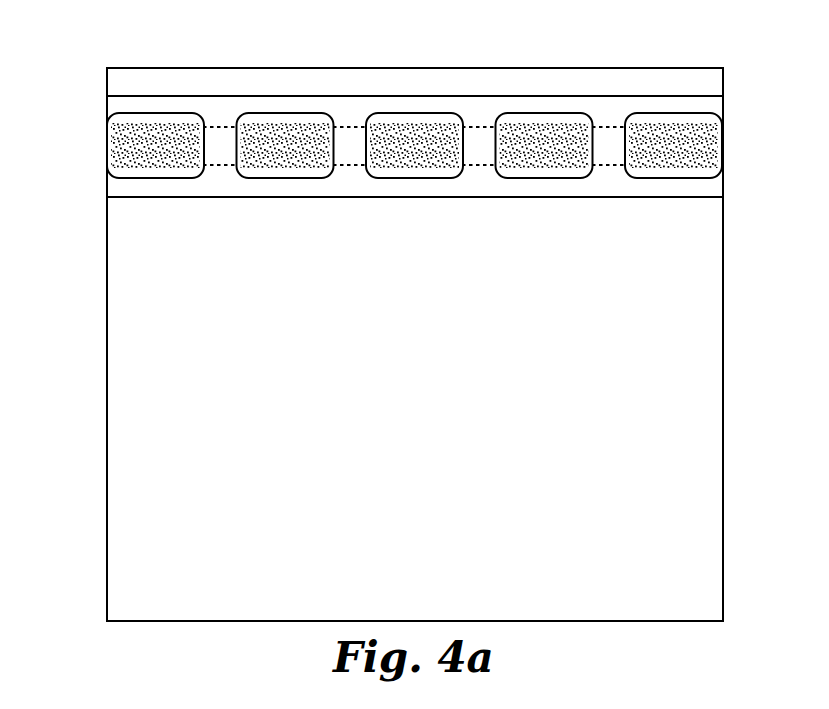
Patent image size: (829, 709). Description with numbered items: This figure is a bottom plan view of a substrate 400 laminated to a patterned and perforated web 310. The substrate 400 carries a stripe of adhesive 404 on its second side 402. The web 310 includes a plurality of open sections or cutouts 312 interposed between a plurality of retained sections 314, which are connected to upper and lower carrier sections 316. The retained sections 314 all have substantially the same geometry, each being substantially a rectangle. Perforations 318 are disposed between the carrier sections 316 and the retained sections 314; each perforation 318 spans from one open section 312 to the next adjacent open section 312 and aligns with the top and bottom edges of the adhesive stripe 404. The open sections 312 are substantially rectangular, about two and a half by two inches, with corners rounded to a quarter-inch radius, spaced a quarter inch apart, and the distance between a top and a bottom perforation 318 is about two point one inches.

The substrate 400 is at (622, 65).
The perforated web 310 is at (705, 100).
The open sections 312 is at (542, 118).
The retained sections 314 is at (610, 147).
The carrier sections 316 is at (113, 105).
The perforations 318 is at (350, 125).
The second side 402 is at (433, 370).
The stripe of adhesive 404 is at (705, 143).